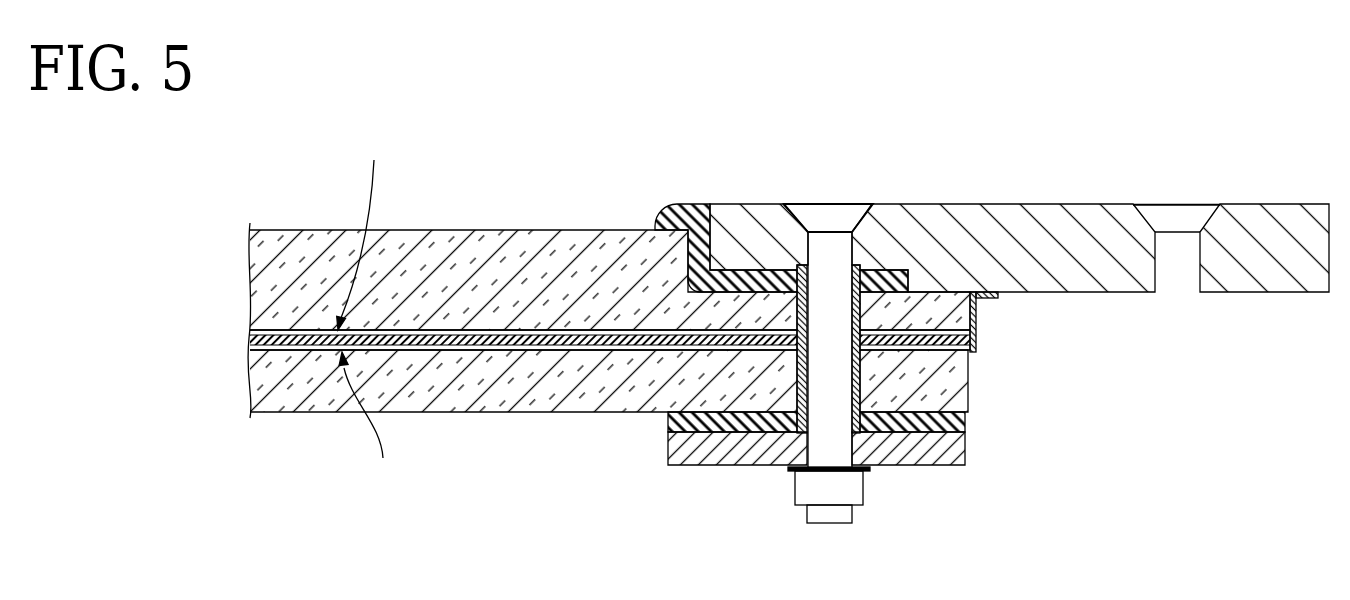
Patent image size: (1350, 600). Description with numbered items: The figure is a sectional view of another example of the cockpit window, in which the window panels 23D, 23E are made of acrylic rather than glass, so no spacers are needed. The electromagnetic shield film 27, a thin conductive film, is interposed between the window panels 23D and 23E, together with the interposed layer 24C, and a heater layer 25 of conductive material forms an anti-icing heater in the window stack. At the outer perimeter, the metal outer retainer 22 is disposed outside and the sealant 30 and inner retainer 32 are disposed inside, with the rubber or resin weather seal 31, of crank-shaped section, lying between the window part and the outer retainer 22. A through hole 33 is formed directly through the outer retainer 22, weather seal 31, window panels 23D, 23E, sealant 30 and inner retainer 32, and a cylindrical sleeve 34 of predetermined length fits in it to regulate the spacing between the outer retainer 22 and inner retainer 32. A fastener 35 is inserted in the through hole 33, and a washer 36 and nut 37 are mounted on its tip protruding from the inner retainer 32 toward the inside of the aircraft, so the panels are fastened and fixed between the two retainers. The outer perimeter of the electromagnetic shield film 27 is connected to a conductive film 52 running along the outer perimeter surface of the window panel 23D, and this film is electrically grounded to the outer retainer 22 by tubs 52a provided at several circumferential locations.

The outer retainer 22 is at (1090, 213).
The window panel 23D is at (268, 282).
The metal core layer 24C is at (255, 338).
The window panel 23E is at (268, 382).
The heater layer 25 is at (362, 231).
The electromagnetic shield film 27 is at (367, 421).
The sealant 30 is at (963, 423).
The weather seal 31 is at (695, 207).
The inner retainer 32 is at (963, 453).
The through hole 33 is at (808, 380).
The cylindrical sleeve 34 is at (823, 425).
The fastener 35 is at (853, 215).
The washer 36 is at (866, 468).
The nut 37 is at (855, 485).
The conductive film 52 is at (977, 335).
The tubs 52a is at (989, 298).